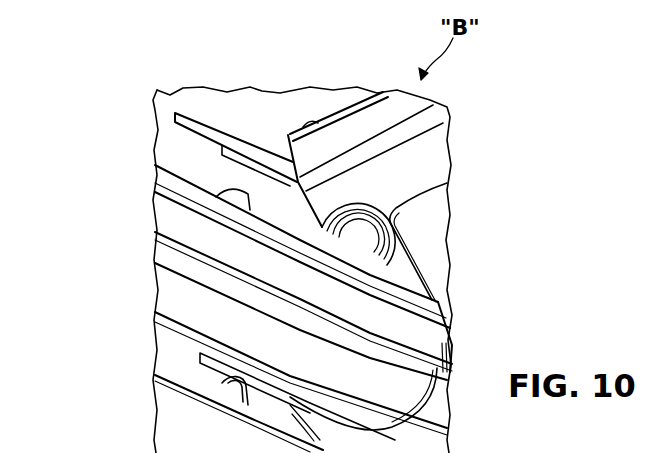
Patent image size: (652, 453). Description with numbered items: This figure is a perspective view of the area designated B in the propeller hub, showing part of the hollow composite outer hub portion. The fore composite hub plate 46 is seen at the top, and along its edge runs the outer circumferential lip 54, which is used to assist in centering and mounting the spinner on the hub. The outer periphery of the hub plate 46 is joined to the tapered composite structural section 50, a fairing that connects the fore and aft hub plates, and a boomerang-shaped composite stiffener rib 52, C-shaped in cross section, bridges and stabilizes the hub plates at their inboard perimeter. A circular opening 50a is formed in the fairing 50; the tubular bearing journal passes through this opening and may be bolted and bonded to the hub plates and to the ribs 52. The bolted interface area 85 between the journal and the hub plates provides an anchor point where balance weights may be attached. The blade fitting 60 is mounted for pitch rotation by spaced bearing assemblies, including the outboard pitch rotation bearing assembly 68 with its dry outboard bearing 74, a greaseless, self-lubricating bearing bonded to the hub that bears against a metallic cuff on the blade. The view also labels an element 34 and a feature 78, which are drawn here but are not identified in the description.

The composite stiffener rib 52 is at (164, 91).
The fore composite hub plate 46 is at (238, 90).
The bolted interface area 85 is at (311, 114).
The outer circumferential lip 54 is at (350, 123).
The tapered composite structural section 50 is at (425, 152).
The circular opening 50a is at (416, 248).
The bore 78 is at (332, 244).
The rail 34 is at (250, 292).
The blade fitting 60 is at (156, 377).
The outboard pitch rotation bearing assembly 68 is at (226, 385).
The dry outboard bearing 74 is at (237, 387).